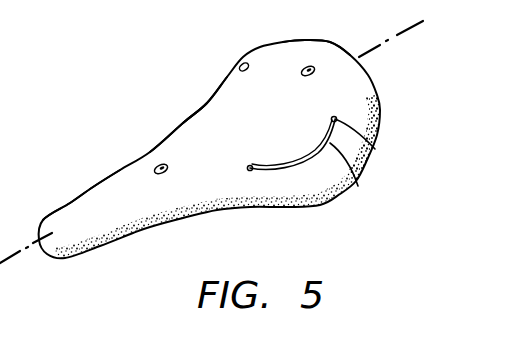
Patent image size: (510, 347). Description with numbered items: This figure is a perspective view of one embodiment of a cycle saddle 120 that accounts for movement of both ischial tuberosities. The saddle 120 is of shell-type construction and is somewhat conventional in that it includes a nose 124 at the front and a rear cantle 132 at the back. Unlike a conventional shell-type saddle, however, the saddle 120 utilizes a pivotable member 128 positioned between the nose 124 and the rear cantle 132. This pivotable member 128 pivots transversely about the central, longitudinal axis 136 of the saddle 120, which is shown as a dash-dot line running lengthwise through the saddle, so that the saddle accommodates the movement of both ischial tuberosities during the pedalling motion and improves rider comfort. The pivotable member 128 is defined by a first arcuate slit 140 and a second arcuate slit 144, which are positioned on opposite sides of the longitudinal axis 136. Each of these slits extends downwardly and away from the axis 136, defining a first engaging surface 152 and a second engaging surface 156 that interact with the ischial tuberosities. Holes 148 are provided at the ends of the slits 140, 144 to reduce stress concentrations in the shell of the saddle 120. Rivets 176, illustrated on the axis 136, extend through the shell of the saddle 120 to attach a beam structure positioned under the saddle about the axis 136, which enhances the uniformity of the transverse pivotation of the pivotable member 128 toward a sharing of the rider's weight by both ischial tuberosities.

The saddle 120 is at (107, 243).
The nose 124 is at (93, 193).
The pivotable member 128 is at (232, 100).
The rear cantle 132 is at (327, 47).
The central, longitudinal axis 136 is at (417, 40).
The first arcuate slit 140 is at (355, 179).
The second arcuate slit 144 is at (243, 63).
The holes 148 is at (247, 173).
The first engaging surface 152 is at (300, 148).
The second engaging surface 156 is at (207, 107).
The rivets 176 is at (302, 76).